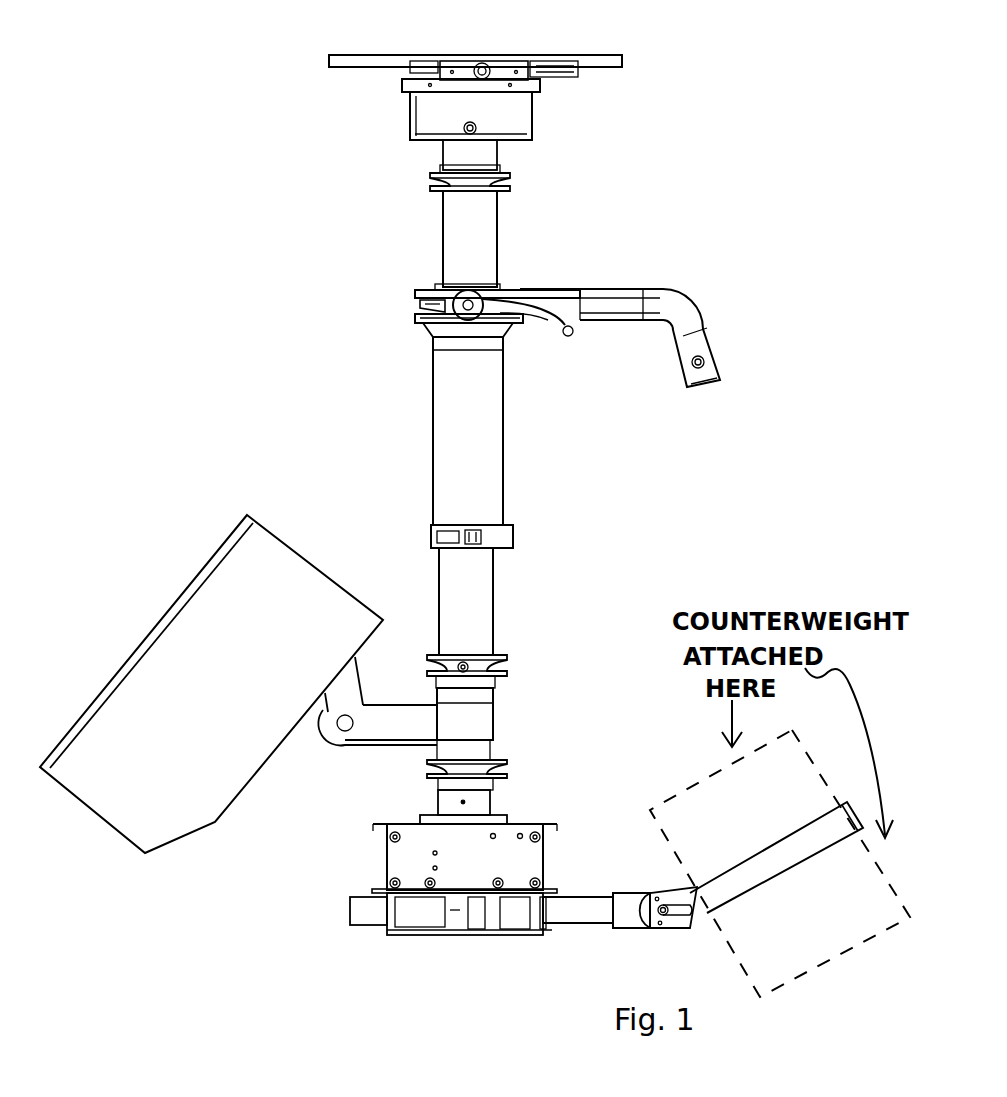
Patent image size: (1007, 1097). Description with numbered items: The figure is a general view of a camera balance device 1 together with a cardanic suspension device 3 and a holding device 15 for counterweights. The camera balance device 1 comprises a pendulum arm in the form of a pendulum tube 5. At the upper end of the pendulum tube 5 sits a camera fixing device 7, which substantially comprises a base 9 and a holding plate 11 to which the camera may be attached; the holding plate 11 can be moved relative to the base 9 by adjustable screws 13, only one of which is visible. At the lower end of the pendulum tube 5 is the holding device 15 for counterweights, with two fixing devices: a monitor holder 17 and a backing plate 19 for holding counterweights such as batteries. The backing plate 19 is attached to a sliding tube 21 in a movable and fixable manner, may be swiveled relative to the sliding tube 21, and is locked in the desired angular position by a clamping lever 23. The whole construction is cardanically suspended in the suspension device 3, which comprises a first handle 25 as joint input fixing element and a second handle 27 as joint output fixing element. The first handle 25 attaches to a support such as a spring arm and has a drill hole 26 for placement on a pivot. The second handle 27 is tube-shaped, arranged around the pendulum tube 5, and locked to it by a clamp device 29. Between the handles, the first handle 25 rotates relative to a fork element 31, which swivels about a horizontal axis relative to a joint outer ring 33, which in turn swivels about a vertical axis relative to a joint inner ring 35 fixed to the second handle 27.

The camera balance device 1 is at (550, 560).
The cardanic suspension device 3 is at (461, 284).
The pendulum tube 5 is at (460, 229).
The camera fixing device 7 is at (379, 30).
The base 9 is at (516, 120).
The holding plate 11 is at (598, 62).
The adjustable screws 13 is at (466, 128).
The holding device for counterweights 15 is at (575, 808).
The monitor holder 17 is at (225, 785).
The backing plate 19 is at (749, 868).
The sliding tube 21 is at (585, 912).
The clamping lever 23 is at (668, 918).
The first handle 25 is at (623, 342).
The drill hole 26 is at (708, 390).
The second handle 27 is at (484, 449).
The clamp device 29 is at (504, 536).
The fork element 31 is at (548, 312).
The joint outer ring 33 is at (432, 303).
The joint inner ring 35 is at (420, 322).